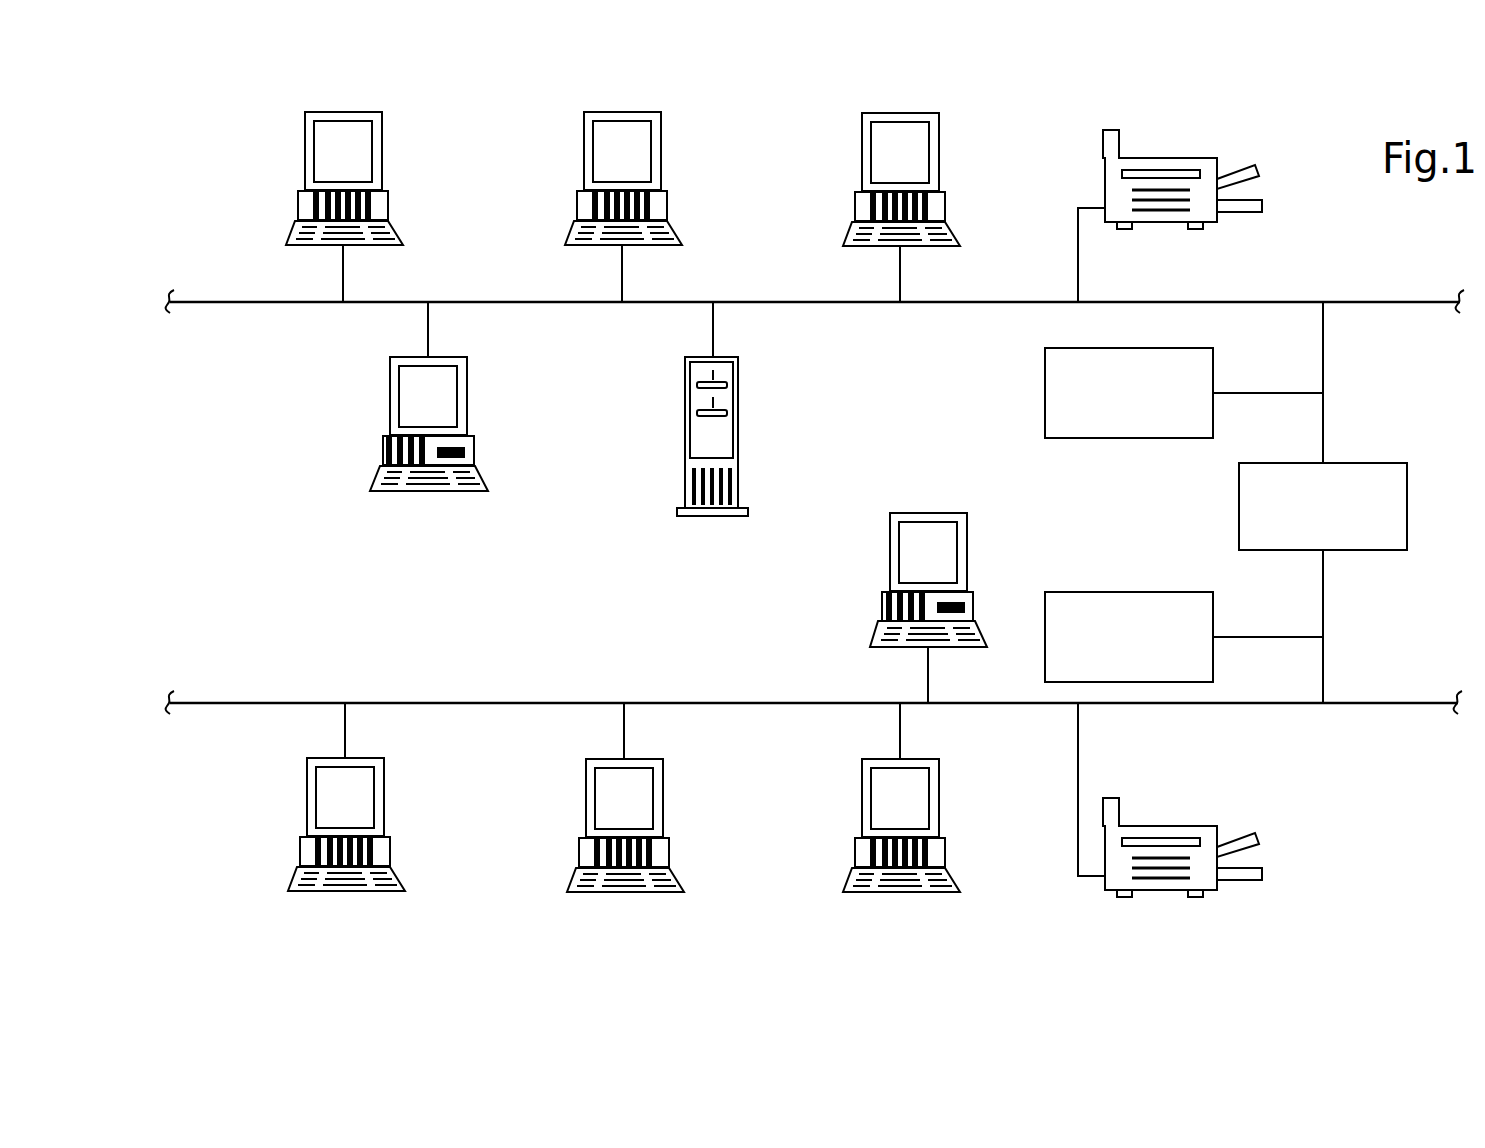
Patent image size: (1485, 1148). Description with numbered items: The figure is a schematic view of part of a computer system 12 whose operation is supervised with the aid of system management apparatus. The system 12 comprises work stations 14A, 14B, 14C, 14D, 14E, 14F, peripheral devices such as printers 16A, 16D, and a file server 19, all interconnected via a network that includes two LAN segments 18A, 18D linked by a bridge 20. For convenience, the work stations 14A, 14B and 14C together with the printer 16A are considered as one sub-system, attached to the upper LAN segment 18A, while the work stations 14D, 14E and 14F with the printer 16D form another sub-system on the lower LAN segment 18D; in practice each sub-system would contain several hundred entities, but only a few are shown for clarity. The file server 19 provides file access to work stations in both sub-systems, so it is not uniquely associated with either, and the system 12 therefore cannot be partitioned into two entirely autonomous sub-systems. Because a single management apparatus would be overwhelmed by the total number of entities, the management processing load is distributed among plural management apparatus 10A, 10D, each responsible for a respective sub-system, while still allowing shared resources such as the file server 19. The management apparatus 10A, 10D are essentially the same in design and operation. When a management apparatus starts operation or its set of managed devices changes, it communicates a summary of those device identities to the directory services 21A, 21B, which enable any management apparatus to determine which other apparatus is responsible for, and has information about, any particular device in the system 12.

The computer system 12 is at (1368, 798).
The work station 14A is at (382, 145).
The work station 14B is at (661, 145).
The work station 14C is at (939, 145).
The work station 14D is at (384, 788).
The work station 14E is at (663, 789).
The work station 14F is at (939, 789).
The management apparatus 10A is at (467, 388).
The management apparatus 10D is at (890, 548).
The file server 19 is at (739, 400).
The printer 16A is at (1217, 224).
The printer 16D is at (1217, 892).
The LAN segment 18A is at (263, 301).
The LAN segment 18D is at (482, 702).
The directory service 21A is at (1215, 378).
The directory service 21B is at (1215, 622).
The bridge 20 is at (1363, 462).